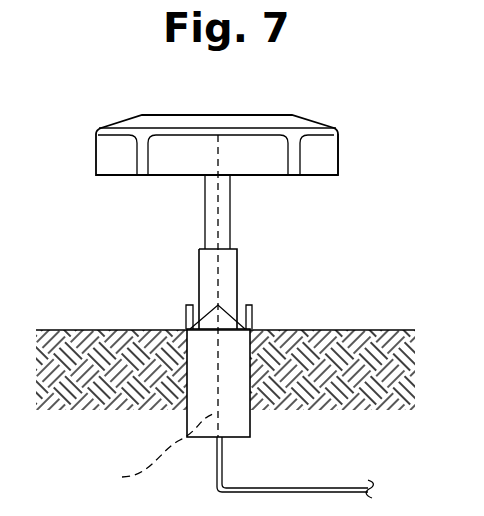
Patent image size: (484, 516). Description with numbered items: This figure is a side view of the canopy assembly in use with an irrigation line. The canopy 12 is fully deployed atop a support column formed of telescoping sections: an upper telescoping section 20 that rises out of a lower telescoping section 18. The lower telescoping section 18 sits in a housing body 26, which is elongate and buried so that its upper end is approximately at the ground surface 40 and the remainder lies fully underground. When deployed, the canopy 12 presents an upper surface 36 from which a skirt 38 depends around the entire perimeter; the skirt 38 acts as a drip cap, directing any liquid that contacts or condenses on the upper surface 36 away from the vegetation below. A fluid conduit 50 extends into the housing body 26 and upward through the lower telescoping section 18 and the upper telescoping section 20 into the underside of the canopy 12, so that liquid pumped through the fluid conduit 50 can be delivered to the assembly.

The canopy 12 is at (214, 115).
The lower telescoping section 18 is at (237, 270).
The upper telescoping section 20 is at (205, 210).
The housing body 26 is at (250, 426).
The upper surface 36 is at (238, 117).
The skirt 38 is at (328, 162).
The ground surface 40 is at (392, 330).
The fluid conduit 50 is at (154, 450).